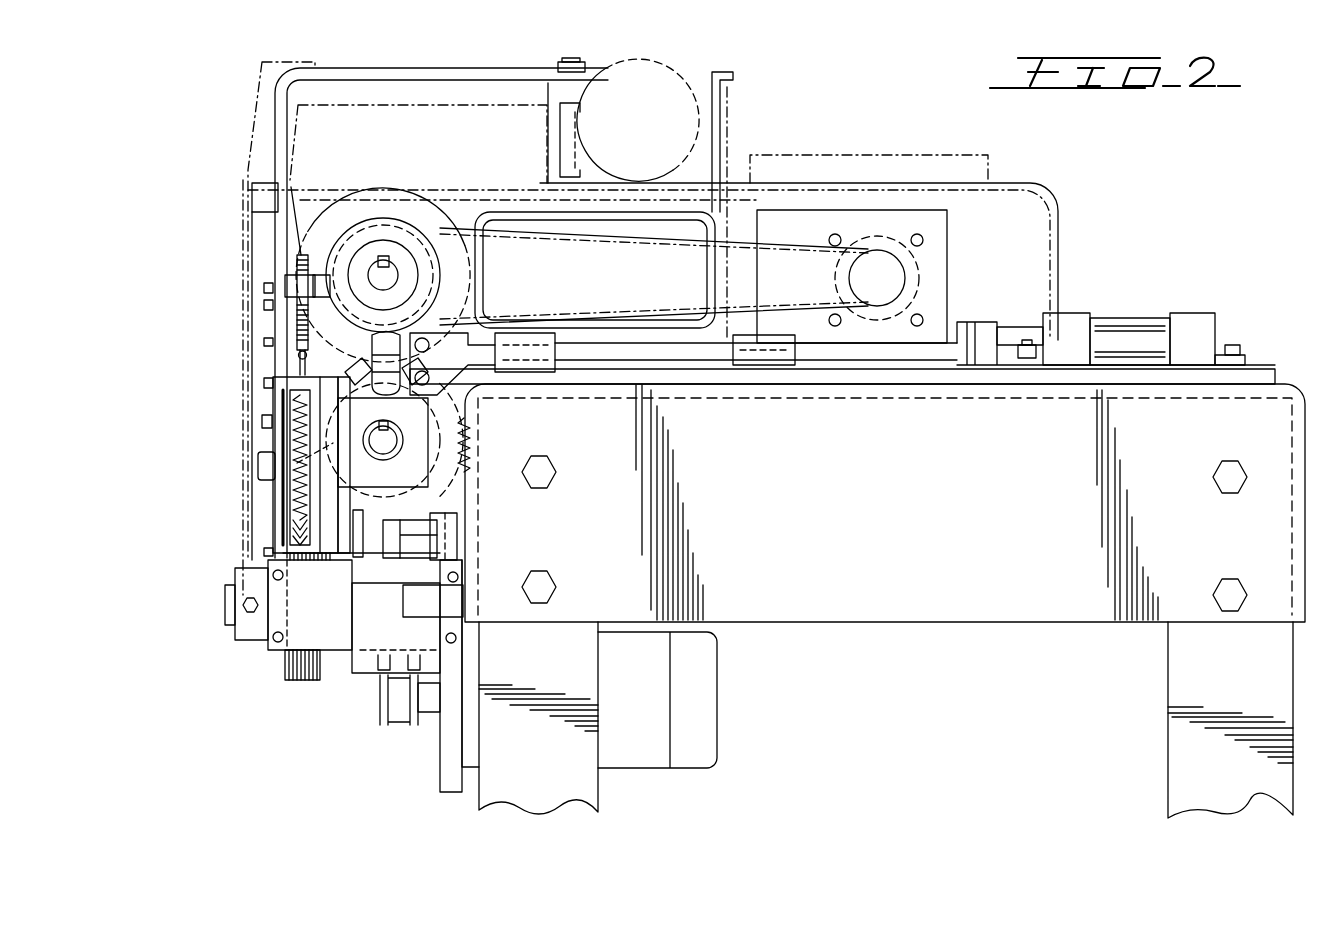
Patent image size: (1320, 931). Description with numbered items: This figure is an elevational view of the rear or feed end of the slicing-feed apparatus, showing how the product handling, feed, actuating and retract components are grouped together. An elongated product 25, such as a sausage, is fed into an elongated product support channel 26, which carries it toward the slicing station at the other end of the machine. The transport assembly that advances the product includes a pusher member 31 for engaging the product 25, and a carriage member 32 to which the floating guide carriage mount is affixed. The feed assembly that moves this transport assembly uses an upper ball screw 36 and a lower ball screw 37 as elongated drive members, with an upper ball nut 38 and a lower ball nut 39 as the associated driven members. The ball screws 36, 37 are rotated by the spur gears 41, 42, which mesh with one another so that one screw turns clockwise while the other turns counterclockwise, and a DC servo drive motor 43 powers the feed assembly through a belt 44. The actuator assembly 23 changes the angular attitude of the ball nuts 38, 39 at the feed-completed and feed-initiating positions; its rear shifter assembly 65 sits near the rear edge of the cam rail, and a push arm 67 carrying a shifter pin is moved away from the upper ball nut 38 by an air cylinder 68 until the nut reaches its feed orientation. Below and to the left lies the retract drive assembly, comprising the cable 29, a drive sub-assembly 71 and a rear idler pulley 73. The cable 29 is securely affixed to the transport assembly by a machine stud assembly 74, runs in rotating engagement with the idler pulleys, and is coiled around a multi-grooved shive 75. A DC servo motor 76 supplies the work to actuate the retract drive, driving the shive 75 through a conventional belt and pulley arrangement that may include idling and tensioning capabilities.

The actuator assembly 23 is at (1205, 300).
The elongated product 25 is at (712, 95).
The elongated product support channel 26 is at (697, 165).
The cable 29 is at (283, 403).
The pusher member 31 is at (334, 73).
The carriage member 32 is at (278, 215).
The upper ball screw 36 is at (385, 280).
The lower ball screw 37 is at (378, 440).
The upper ball nut 38 is at (345, 244).
The lower ball nut 39 is at (262, 427).
The spur gear 41 is at (405, 205).
The spur gear 42 is at (455, 452).
The DC servo drive motor 43 is at (915, 262).
The belt 44 is at (725, 243).
The rear shifter assembly 65 is at (590, 350).
The push arm 67 is at (950, 353).
The air cylinder 68 is at (1140, 350).
The drive sub-assembly 71 is at (250, 648).
The rear idler pulley 73 is at (295, 500).
The machine stud assembly 74 is at (300, 333).
The multi-grooved shive 75 is at (285, 662).
The DC servo motor 76 is at (717, 718).